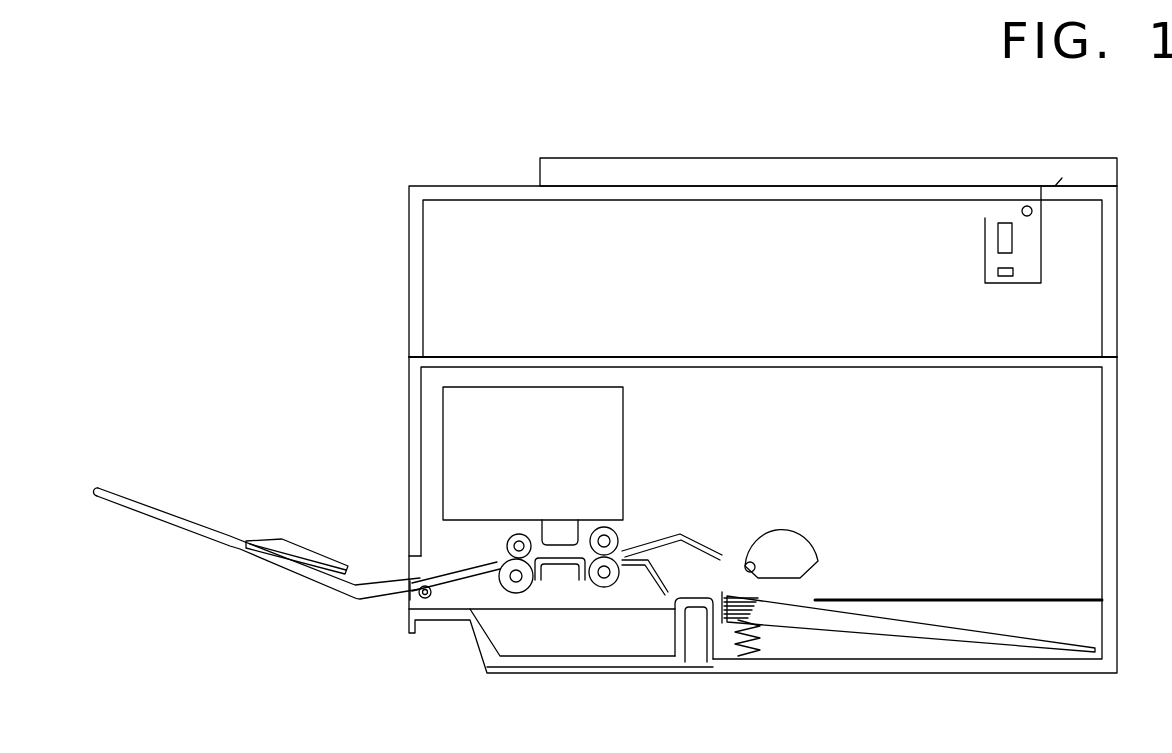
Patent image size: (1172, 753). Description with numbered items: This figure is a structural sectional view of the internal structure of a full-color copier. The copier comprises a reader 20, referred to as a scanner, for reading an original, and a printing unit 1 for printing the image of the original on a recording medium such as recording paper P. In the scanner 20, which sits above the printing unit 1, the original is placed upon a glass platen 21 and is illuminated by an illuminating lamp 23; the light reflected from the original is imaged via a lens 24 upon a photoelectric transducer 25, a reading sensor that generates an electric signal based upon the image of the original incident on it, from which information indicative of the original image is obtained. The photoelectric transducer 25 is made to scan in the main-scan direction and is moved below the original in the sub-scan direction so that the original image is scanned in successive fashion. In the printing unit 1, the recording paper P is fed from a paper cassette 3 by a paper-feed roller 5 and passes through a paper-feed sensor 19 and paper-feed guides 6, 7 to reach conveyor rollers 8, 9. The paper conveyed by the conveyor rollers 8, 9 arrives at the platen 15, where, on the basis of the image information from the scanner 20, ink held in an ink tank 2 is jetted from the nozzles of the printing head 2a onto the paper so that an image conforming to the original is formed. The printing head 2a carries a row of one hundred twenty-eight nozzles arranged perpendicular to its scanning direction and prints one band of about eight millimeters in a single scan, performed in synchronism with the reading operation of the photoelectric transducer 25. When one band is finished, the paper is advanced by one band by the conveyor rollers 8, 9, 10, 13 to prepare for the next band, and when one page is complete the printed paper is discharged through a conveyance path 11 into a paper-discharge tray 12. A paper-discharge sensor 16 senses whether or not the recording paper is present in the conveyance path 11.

The printing unit 1 is at (1092, 406).
The ink tank 2 is at (528, 400).
The printing head 2a is at (560, 548).
The paper cassette 3 is at (912, 655).
The paper-feed roller 5 is at (795, 525).
The paper-feed guide 6 is at (680, 612).
The paper-feed guide 7 is at (666, 547).
The conveyor roller 8 is at (603, 588).
The conveyor roller 9 is at (619, 530).
The conveyor roller 10 is at (517, 594).
The conveyance path 11 is at (462, 568).
The paper-discharge tray 12 is at (236, 550).
The conveyor roller 13 is at (521, 534).
The platen 15 is at (567, 566).
The paper-discharge sensor 16 is at (492, 559).
The paper-feed sensor 19 is at (637, 566).
The reader 20 is at (1092, 281).
The glass platen 21 is at (929, 190).
The illuminating lamp 23 is at (1033, 216).
The lens 24 is at (998, 240).
The photoelectric transducer 25 is at (1007, 278).
The recording paper P is at (955, 617).